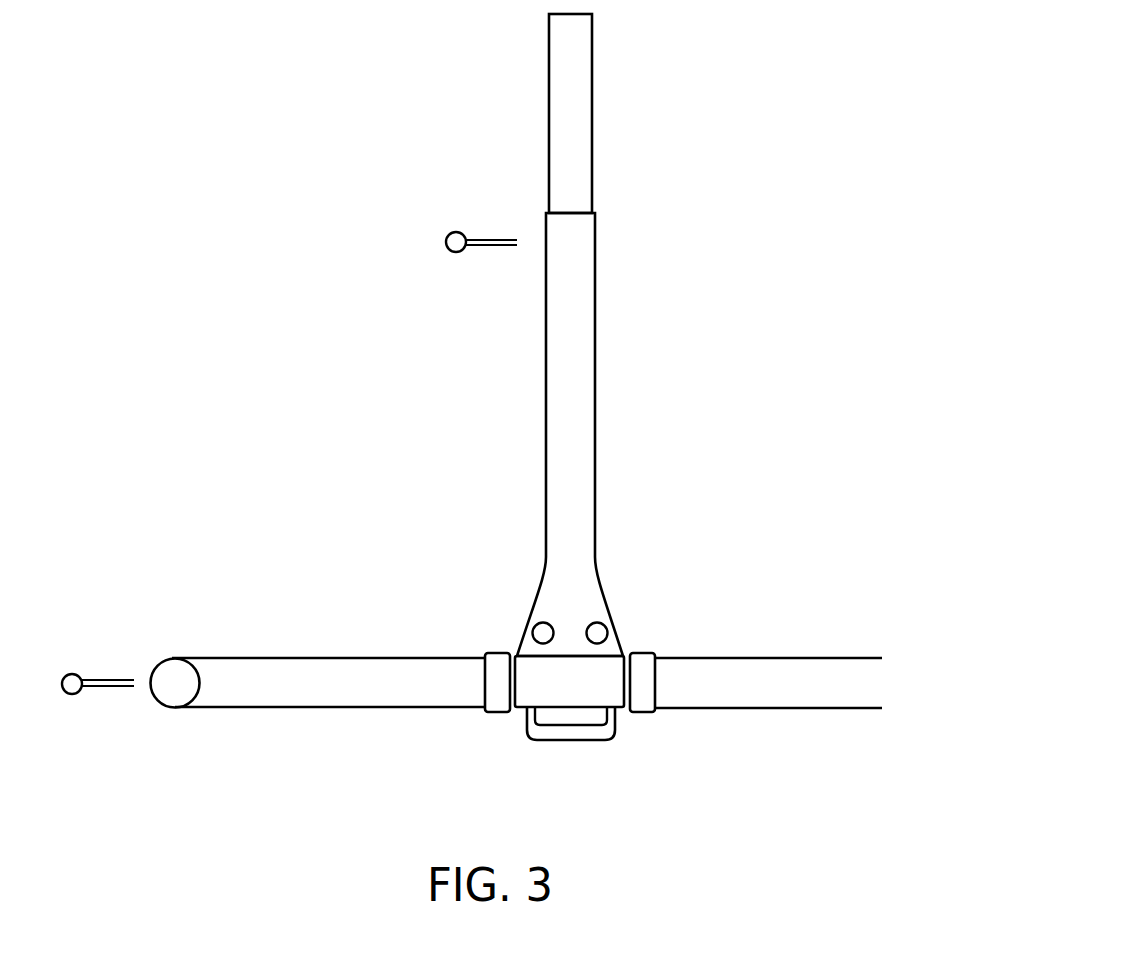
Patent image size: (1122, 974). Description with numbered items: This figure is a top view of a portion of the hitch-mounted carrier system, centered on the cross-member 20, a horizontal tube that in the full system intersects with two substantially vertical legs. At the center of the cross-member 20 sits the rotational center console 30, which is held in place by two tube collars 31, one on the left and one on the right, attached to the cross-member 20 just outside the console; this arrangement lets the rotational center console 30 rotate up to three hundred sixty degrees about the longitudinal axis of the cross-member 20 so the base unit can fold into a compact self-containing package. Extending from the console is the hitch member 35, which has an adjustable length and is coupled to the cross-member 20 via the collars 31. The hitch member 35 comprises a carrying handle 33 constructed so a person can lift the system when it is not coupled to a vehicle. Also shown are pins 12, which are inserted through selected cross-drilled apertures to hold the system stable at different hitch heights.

The pin 12 is at (112, 680).
The cross-member 20 is at (302, 656).
The rotational center console 30 is at (595, 313).
The tube collar 31 is at (500, 652).
The carrying handle 33 is at (615, 722).
The hitch member 35 is at (593, 90).